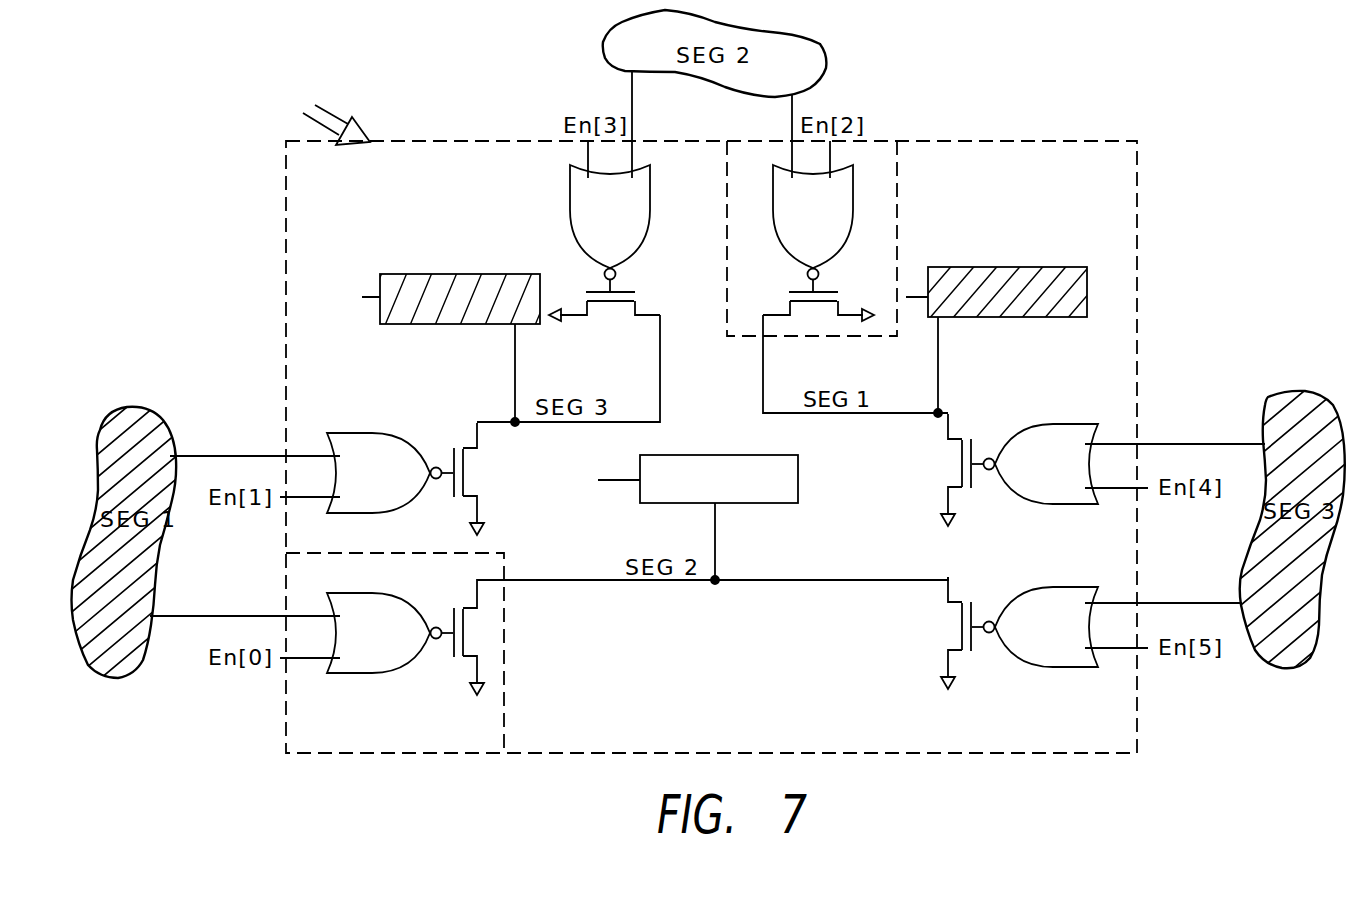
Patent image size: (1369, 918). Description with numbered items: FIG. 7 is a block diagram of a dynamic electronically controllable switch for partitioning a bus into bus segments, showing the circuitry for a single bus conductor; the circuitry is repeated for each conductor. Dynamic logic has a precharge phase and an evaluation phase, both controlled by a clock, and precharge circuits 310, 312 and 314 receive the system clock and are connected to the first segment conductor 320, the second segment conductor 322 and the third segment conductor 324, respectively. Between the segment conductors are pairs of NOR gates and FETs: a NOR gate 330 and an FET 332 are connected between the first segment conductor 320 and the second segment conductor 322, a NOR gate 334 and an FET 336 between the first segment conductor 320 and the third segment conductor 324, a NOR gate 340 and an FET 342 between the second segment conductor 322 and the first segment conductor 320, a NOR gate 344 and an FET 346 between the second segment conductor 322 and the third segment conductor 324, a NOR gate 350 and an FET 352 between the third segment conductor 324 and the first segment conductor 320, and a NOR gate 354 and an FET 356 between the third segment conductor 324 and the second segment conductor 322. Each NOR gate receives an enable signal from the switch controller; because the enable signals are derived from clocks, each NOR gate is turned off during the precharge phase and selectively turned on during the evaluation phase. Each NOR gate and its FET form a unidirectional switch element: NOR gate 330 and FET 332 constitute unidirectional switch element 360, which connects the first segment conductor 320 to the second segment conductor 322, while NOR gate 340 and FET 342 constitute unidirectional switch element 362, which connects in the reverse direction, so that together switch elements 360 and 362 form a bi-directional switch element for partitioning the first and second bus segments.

The precharge circuit 310 is at (1005, 265).
The precharge circuit 312 is at (755, 452).
The precharge circuit 314 is at (450, 274).
The bus segment 1 conductor 320 is at (262, 455).
The bus segment 2 conductor 322 is at (628, 97).
The bus segment 3 conductor 324 is at (658, 392).
The NOR gate 330 is at (347, 678).
The FET 332 is at (462, 608).
The NOR gate 334 is at (370, 430).
The FET 336 is at (462, 443).
The NOR gate 340 is at (852, 197).
The FET 342 is at (790, 295).
The NOR gate 344 is at (570, 210).
The FET 346 is at (633, 295).
The NOR gate 350 is at (1028, 423).
The FET 352 is at (967, 437).
The NOR gate 354 is at (1040, 585).
The FET 356 is at (970, 598).
The unidirectional switch element 360 is at (514, 653).
The unidirectional switch element 362 is at (906, 190).